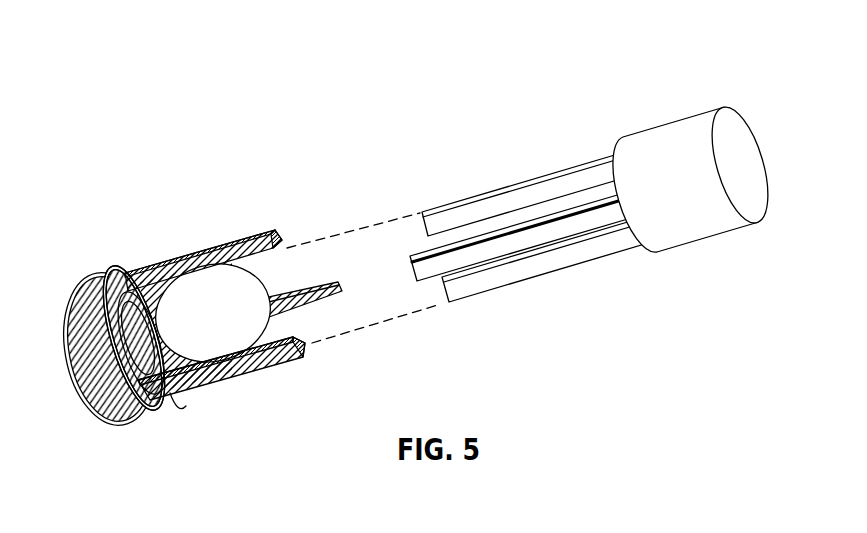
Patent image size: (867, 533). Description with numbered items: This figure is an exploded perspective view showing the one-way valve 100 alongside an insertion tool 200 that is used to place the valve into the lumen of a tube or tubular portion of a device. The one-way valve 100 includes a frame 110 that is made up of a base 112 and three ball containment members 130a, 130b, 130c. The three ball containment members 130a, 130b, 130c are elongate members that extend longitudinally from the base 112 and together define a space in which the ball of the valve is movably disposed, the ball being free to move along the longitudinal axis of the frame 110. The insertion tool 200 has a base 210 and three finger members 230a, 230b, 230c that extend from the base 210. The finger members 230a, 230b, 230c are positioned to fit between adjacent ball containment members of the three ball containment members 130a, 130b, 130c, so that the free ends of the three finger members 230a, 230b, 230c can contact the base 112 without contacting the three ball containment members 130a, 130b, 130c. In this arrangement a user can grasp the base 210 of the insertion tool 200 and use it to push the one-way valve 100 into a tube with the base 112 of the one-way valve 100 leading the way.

The one-way valve 100 is at (227, 327).
The frame 110 is at (83, 443).
The base 112 is at (138, 420).
The ball containment member 130a is at (277, 233).
The ball containment member 130b is at (303, 357).
The ball containment member 130c is at (335, 305).
The insertion tool 200 is at (581, 197).
The base 210 is at (693, 242).
The finger member 230a is at (465, 199).
The finger member 230b is at (551, 272).
The finger member 230c is at (419, 279).